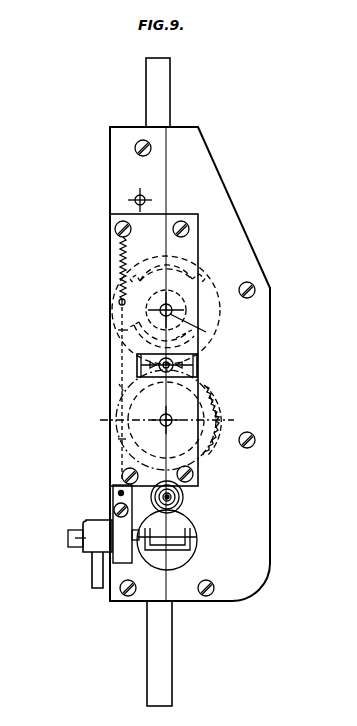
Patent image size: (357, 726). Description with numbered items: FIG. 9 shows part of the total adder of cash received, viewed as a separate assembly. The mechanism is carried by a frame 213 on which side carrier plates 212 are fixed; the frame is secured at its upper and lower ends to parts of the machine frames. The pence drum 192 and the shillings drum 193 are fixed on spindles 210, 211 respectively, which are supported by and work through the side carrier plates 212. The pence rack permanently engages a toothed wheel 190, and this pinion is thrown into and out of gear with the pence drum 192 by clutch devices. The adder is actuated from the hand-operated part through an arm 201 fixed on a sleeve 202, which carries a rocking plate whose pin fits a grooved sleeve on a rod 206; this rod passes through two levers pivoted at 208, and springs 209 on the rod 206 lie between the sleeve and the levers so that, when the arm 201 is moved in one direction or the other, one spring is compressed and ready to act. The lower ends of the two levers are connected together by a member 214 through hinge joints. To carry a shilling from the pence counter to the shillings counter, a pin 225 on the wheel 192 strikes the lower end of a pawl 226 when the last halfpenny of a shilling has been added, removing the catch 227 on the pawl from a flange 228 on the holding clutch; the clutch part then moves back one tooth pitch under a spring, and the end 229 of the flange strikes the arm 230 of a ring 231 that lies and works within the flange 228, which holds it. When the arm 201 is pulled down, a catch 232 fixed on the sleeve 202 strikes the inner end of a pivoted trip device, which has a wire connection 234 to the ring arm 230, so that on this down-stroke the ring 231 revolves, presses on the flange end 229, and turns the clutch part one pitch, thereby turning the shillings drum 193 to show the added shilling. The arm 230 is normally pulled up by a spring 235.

The frame 213 is at (160, 92).
The side carrier plates 212 is at (225, 220).
The shillings drum 193 is at (213, 284).
The ring 231 is at (200, 274).
The flange 228 is at (200, 308).
The spindle 211 is at (178, 318).
The catch 227 is at (193, 336).
The pivot 208 is at (137, 358).
The pence drum 192 is at (214, 452).
The toothed wheel 190 is at (210, 410).
The spindle 210 is at (166, 427).
The pin 225 is at (213, 395).
The spring 235 is at (123, 256).
The arm 230 is at (119, 302).
The end of flange 229 is at (118, 330).
The pawl 226 is at (120, 388).
The wire connection 234 is at (118, 439).
The rod 206 is at (184, 497).
The springs 209 is at (178, 504).
The member 214 is at (191, 548).
The catch 232 is at (124, 530).
The sleeve 202 is at (80, 540).
The arm 201 is at (95, 575).